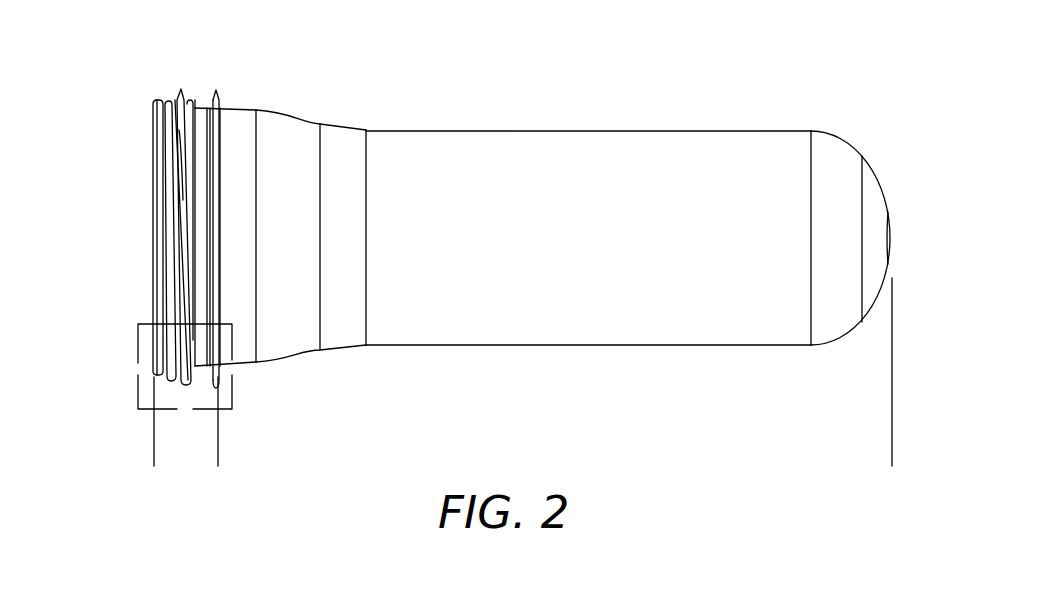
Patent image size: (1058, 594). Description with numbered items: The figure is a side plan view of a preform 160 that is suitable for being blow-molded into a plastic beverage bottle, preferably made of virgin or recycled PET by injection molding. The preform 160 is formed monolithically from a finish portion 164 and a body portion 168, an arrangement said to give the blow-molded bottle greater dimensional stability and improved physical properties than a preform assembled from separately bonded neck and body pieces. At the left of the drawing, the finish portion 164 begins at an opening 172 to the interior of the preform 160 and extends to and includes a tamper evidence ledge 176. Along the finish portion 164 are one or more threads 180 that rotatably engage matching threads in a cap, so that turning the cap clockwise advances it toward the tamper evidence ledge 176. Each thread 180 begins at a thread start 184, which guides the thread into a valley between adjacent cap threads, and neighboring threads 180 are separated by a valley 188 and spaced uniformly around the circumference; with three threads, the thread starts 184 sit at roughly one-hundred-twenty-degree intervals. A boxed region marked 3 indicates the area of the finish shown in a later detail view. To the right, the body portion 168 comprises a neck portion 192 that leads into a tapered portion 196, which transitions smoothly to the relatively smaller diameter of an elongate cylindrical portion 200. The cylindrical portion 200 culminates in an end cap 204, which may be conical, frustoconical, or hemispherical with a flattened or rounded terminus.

The preform 160 is at (577, 78).
The finish portion 164 is at (520, 440).
The body portion 168 is at (890, 440).
The opening 172 is at (143, 235).
The tamper evidence ledge 176 is at (216, 90).
The threads 180 is at (181, 89).
The thread start 184 is at (172, 127).
The valley 188 is at (178, 167).
The neck portion 192 is at (238, 108).
The tapered portion 196 is at (302, 355).
The cylindrical portion 200 is at (662, 345).
The end cap 204 is at (892, 236).
The detail region shown in FIG. 3 is at (137, 411).